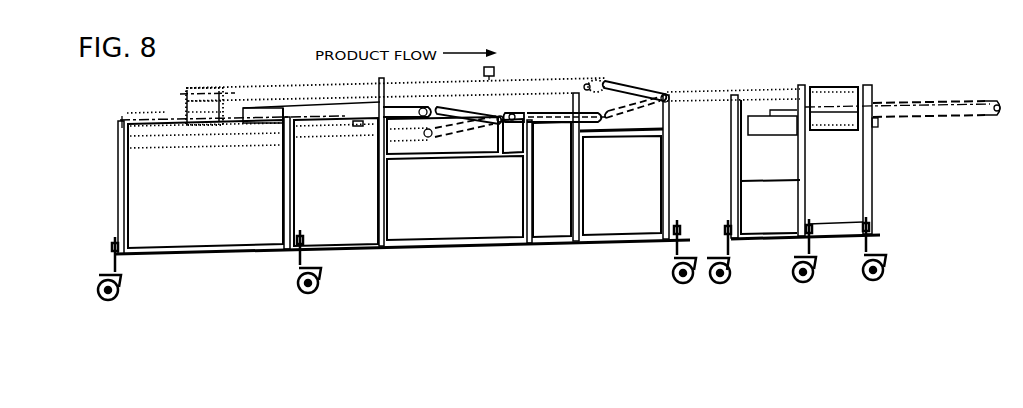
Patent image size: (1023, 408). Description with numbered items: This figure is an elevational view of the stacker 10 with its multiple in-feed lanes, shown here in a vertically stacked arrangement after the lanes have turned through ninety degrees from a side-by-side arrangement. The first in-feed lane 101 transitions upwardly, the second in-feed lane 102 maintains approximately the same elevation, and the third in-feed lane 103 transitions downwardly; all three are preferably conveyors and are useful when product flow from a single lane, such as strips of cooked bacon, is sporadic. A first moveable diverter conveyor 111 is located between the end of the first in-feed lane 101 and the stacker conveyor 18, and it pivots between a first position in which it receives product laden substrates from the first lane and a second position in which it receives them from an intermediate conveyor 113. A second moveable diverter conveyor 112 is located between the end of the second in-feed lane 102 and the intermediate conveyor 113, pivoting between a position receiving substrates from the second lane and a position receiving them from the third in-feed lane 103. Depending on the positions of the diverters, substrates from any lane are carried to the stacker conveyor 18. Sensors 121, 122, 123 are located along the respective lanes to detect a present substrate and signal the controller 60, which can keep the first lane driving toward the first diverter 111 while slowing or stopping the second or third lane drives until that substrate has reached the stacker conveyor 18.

The stacker 10 is at (890, 79).
The stacker conveyor 18 is at (720, 88).
The controller 60 is at (784, 213).
The first in-feed lane 101 is at (185, 120).
The second in-feed lane 102 is at (260, 108).
The third in-feed lane 103 is at (143, 112).
The first moveable diverter conveyor 111 is at (632, 82).
The second moveable diverter conveyor 112 is at (473, 110).
The intermediate conveyor 113 is at (547, 110).
The first sensor 121 is at (490, 70).
The second sensor 122 is at (333, 102).
The third sensor 123 is at (357, 127).